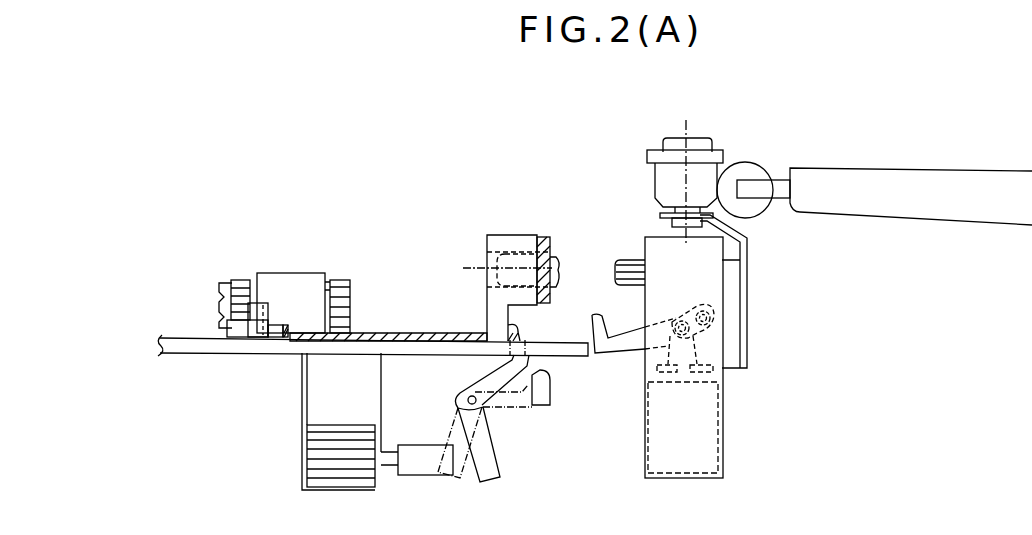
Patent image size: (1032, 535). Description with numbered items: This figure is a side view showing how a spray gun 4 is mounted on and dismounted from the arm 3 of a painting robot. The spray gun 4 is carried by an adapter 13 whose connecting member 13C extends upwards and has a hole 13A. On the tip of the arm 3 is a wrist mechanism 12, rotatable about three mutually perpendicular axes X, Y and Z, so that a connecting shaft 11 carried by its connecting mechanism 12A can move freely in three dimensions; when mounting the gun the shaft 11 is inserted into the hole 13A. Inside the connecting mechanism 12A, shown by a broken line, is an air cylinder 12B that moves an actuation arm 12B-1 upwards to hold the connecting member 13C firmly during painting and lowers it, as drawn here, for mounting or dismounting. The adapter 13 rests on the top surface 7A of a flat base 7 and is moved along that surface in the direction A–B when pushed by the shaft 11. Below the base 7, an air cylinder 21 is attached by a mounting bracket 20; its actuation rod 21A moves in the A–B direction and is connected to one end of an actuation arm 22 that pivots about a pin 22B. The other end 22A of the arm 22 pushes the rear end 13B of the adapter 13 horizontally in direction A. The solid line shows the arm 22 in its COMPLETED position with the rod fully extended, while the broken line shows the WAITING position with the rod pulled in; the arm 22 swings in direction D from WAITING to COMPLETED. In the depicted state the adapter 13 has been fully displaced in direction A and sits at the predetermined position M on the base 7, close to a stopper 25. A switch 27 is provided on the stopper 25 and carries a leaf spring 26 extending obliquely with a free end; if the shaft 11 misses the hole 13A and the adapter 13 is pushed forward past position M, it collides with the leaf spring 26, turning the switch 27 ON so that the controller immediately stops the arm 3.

The arm 3 is at (902, 178).
The spray gun 4 is at (298, 288).
The base 7 is at (568, 362).
The top surface 7A is at (569, 343).
The connecting shaft 11 is at (628, 258).
The wrist mechanism 12 is at (748, 133).
The connecting mechanism 12A is at (723, 303).
The air cylinder 12B is at (723, 438).
The actuation arm 12B-1 is at (640, 352).
The adapter 13 is at (433, 262).
The hole 13A is at (527, 258).
The rear end 13B is at (552, 350).
The connecting member 13C is at (495, 234).
The mounting bracket 20 is at (302, 403).
The air cylinder 21 is at (348, 478).
The actuation rod 21A is at (422, 468).
The actuation arm 22 is at (513, 373).
The other end 22A is at (508, 327).
The pin 22B is at (460, 398).
The stopper 25 is at (260, 300).
The leaf spring 26 is at (279, 333).
The switch 27 is at (237, 333).
The predetermined position M is at (279, 248).
The direction D is at (476, 456).
The axis X is at (687, 110).
The axis Y is at (750, 191).
The axis Z is at (647, 273).
The direction A is at (973, 282).
The direction B is at (978, 283).